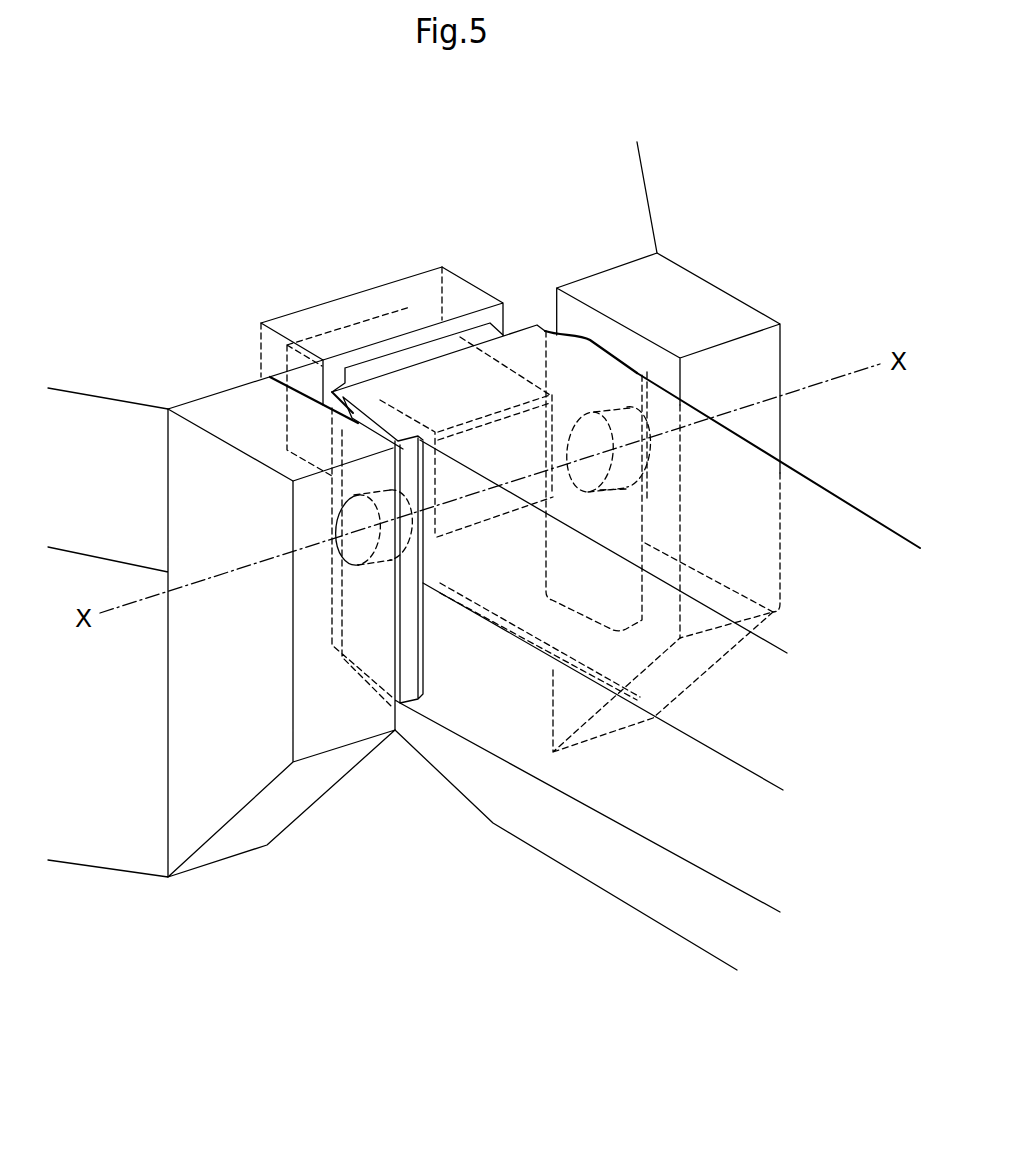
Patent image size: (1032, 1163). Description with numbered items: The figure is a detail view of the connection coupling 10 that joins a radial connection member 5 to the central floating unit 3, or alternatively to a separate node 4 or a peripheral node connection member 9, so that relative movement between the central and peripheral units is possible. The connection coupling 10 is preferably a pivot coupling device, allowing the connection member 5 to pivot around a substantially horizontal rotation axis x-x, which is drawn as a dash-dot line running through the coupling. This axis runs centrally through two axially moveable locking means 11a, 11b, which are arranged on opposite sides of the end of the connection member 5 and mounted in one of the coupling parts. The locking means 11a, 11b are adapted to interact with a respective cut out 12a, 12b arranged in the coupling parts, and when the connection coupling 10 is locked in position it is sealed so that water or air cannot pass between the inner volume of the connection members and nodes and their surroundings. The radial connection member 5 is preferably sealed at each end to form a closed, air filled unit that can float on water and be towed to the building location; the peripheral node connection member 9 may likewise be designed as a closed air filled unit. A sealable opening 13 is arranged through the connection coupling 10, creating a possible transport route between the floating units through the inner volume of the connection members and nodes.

The central floating unit 3 is at (407, 509).
The separate node 4 is at (407, 509).
The peripheral node connection member 9 is at (593, 207).
The radial connection member 5 is at (843, 540).
The connection coupling 10 is at (733, 315).
The locking means 11a is at (633, 477).
The locking means 11b is at (360, 556).
The cut out 12a is at (612, 490).
The cut out 12b is at (412, 557).
The sealable opening 13 is at (464, 384).